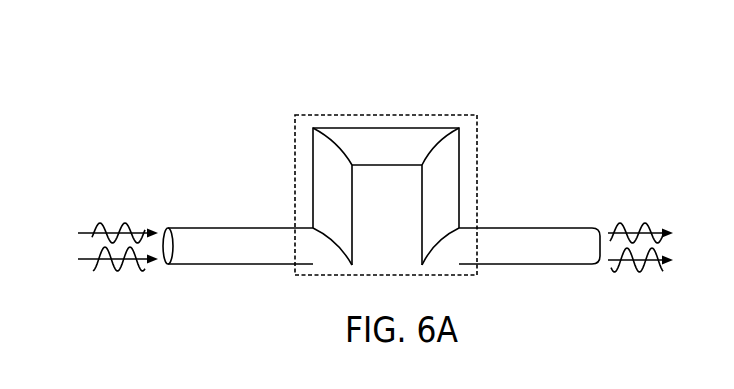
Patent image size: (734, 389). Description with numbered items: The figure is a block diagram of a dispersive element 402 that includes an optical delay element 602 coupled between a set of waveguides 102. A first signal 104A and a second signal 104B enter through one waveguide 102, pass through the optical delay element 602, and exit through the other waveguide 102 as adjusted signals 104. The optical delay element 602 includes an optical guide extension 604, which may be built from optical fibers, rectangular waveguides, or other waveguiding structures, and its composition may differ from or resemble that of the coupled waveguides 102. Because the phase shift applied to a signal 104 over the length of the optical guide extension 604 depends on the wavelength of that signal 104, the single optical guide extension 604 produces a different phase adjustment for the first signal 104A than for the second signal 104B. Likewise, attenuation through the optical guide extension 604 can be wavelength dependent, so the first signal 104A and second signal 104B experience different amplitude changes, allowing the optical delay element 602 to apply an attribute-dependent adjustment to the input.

The dispersive element 402 is at (412, 61).
The optical delay element 602 is at (310, 117).
The optical guide extension 604 is at (400, 153).
The waveguide 102 is at (255, 255).
The signal 104 is at (672, 230).
The first signal 104A is at (90, 233).
The second signal 104B is at (90, 258).